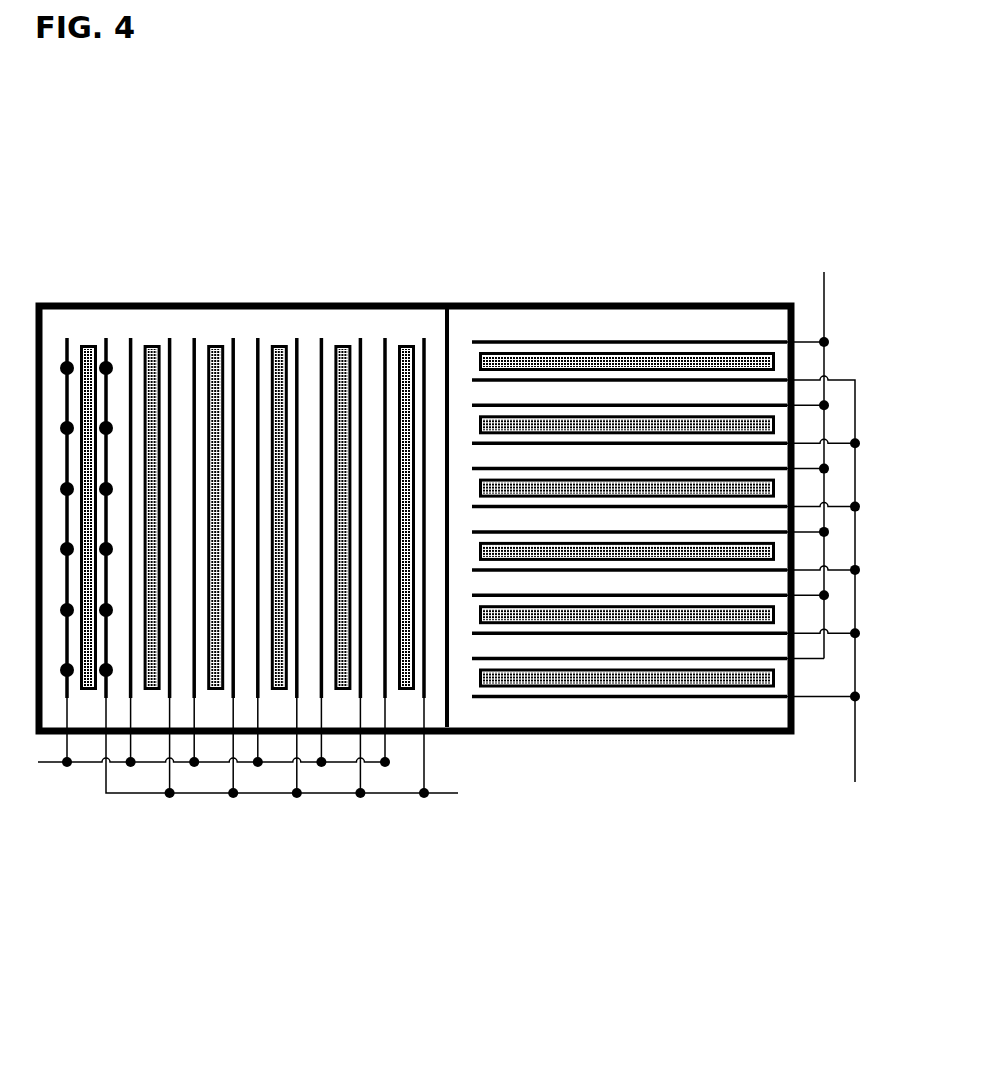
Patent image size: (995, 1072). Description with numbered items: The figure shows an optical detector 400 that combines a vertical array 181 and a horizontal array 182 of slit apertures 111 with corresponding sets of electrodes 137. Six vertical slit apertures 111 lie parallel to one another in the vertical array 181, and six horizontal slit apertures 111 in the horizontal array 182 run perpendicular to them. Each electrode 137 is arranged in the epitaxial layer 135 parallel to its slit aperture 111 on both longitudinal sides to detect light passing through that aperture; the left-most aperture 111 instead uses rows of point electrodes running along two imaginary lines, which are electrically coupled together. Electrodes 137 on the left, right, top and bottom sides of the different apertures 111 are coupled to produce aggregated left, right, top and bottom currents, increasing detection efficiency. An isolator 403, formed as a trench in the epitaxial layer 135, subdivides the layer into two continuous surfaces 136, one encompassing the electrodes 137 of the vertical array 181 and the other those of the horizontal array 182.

The optical detector 400 is at (102, 70).
The epitaxial layer 135 is at (432, 504).
The continuous surface 136 is at (258, 322).
The electrodes 137 is at (233, 338).
The vertical array 181 is at (315, 325).
The horizontal array 182 is at (724, 328).
The slit apertures 111 is at (478, 355).
The isolator 403 is at (452, 707).